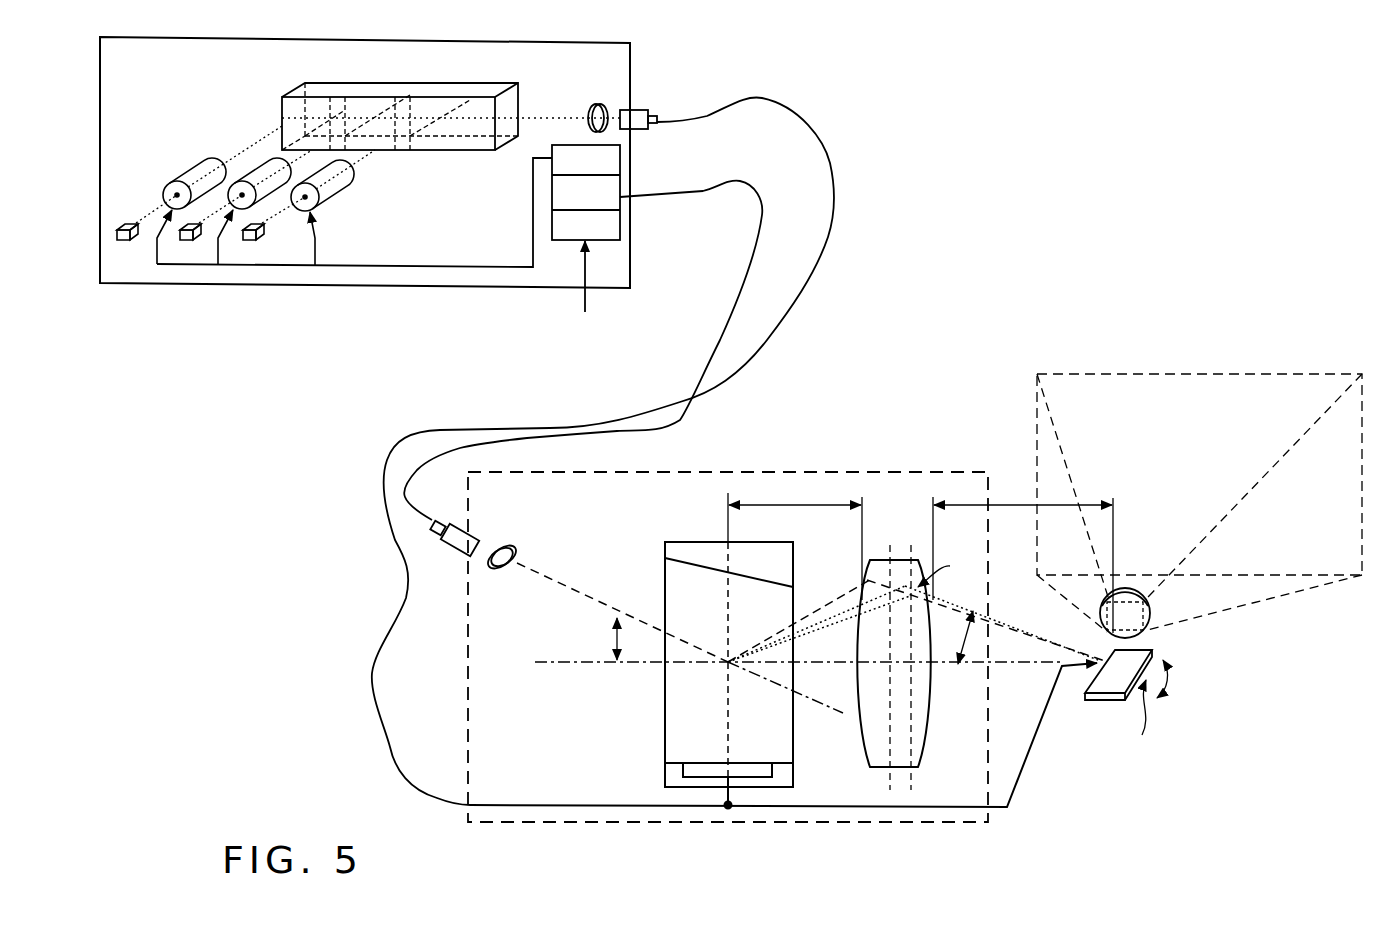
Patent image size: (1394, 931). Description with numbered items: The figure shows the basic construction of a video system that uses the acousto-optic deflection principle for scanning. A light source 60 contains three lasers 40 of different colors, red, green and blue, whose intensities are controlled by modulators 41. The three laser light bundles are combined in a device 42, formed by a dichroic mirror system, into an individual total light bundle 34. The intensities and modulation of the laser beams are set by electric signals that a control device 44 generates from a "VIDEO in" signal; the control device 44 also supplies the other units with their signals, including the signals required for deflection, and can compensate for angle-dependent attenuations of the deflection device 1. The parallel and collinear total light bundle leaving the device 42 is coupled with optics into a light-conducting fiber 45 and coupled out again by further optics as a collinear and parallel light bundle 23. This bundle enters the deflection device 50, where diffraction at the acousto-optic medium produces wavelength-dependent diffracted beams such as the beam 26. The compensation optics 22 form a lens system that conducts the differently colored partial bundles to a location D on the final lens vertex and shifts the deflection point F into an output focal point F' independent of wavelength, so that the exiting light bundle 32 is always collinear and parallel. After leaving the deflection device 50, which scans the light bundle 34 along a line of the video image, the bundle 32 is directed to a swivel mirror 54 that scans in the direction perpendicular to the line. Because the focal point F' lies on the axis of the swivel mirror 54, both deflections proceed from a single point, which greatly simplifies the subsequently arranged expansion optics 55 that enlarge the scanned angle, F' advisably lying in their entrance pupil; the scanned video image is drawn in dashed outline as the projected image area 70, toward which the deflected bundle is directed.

The acousto-optic deflector 1 is at (665, 662).
The compensation optics 22 is at (927, 722).
The light bundle 23 is at (528, 572).
The diffracted beam 26 is at (820, 603).
The exiting light bundle 32 is at (1018, 626).
The total light bundle 34 is at (532, 118).
The lasers 40 is at (125, 224).
The modulators 41 is at (337, 200).
The device for combining light bundles 42 is at (445, 153).
The control device 44 is at (620, 227).
The light-conducting fiber 45 is at (830, 158).
The deflection device 50 is at (571, 507).
The swivel mirror 54 is at (1092, 705).
The expansion optics 55 is at (1143, 637).
The light source 60 is at (151, 77).
The virtual image / screen 70 is at (1098, 374).